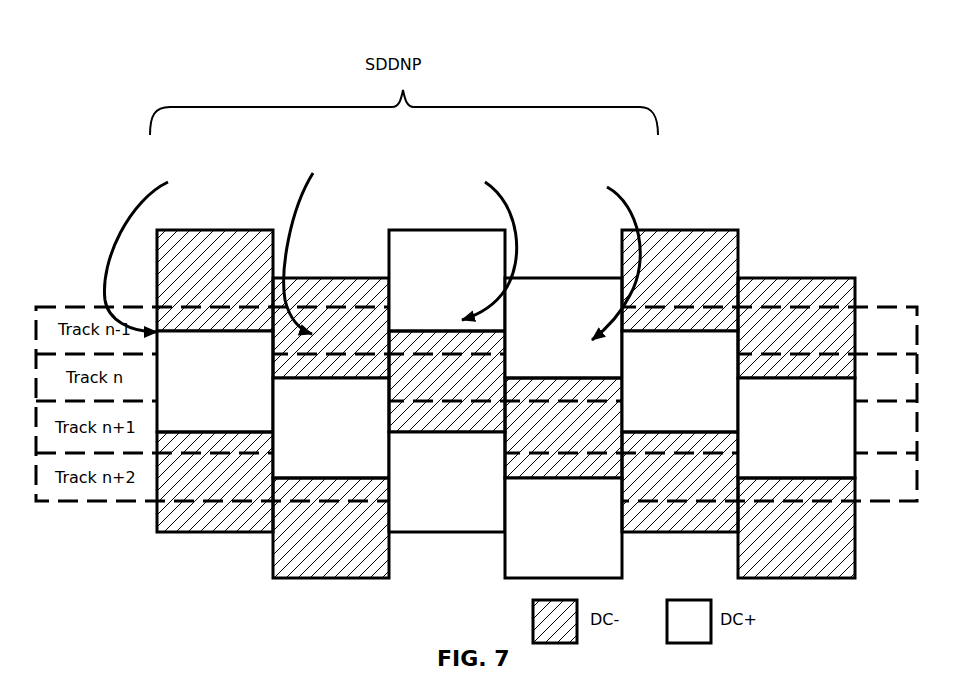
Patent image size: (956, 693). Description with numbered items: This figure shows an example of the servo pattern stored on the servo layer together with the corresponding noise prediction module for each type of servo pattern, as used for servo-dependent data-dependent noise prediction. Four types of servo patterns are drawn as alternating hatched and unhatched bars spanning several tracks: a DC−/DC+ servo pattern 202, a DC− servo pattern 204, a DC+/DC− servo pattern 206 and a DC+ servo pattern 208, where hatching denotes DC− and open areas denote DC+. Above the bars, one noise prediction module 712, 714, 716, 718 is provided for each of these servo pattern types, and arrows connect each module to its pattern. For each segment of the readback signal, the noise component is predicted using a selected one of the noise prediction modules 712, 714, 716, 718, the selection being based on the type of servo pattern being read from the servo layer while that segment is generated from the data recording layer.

The DC−/DC+ servo pattern 202 is at (213, 175).
The DC− servo pattern 204 is at (337, 173).
The DC+/DC− servo pattern 206 is at (468, 173).
The DC+ servo pattern 208 is at (613, 165).
The noise prediction module 712 is at (216, 127).
The noise prediction module 714 is at (337, 127).
The noise prediction module 716 is at (480, 127).
The noise prediction module 718 is at (592, 127).